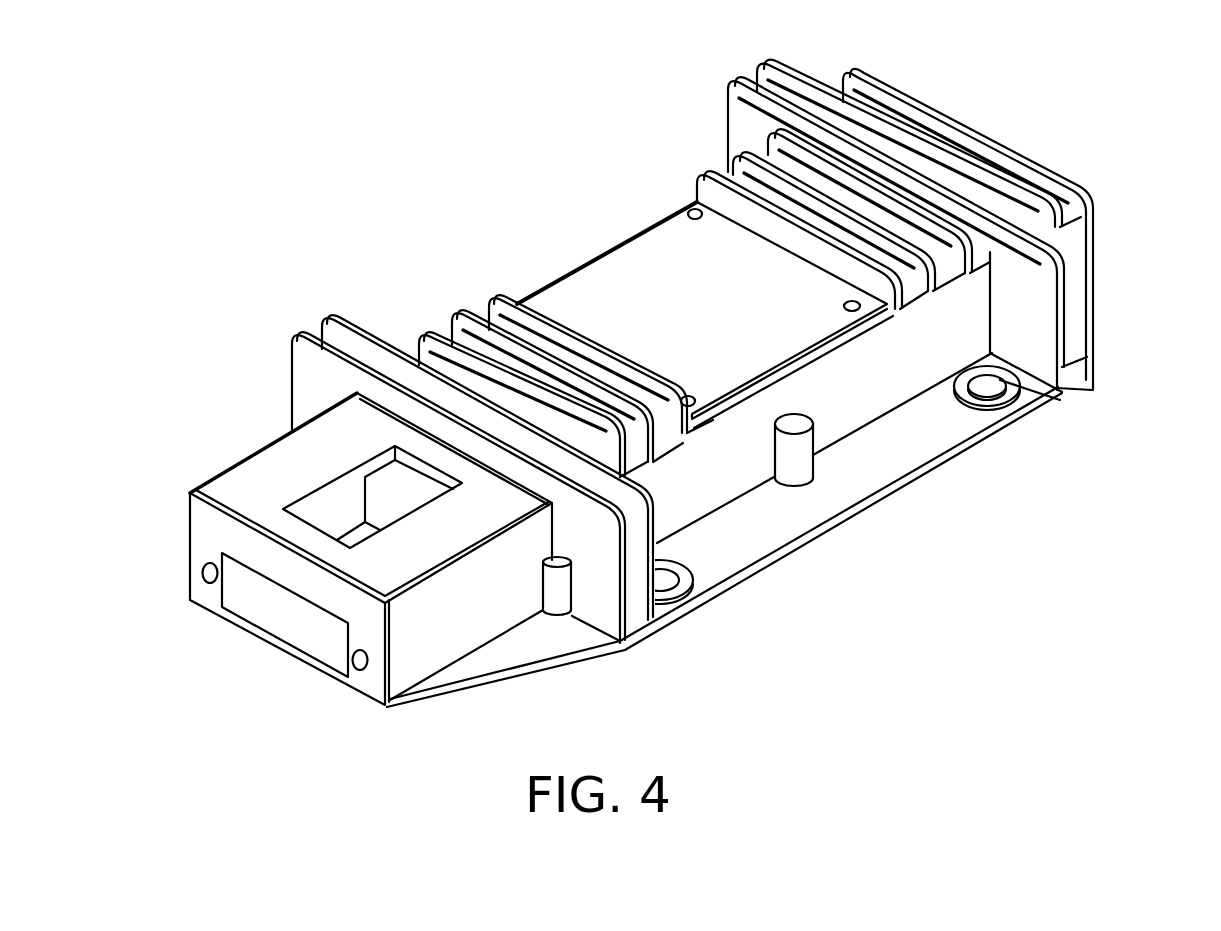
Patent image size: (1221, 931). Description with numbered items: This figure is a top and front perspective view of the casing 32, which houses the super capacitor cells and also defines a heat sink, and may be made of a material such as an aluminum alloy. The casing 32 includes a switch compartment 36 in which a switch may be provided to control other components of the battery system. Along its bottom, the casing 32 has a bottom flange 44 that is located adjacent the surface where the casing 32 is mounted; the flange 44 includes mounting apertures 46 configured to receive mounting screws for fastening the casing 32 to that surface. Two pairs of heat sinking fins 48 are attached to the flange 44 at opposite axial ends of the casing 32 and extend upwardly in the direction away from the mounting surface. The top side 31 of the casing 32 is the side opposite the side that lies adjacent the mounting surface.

The casing 32 is at (428, 155).
The top side 31 is at (355, 393).
The switch compartment 36 is at (333, 513).
The bottom flange 44 is at (793, 530).
The mounting apertures 46 is at (983, 390).
The heat sinking fins 48 is at (1075, 282).